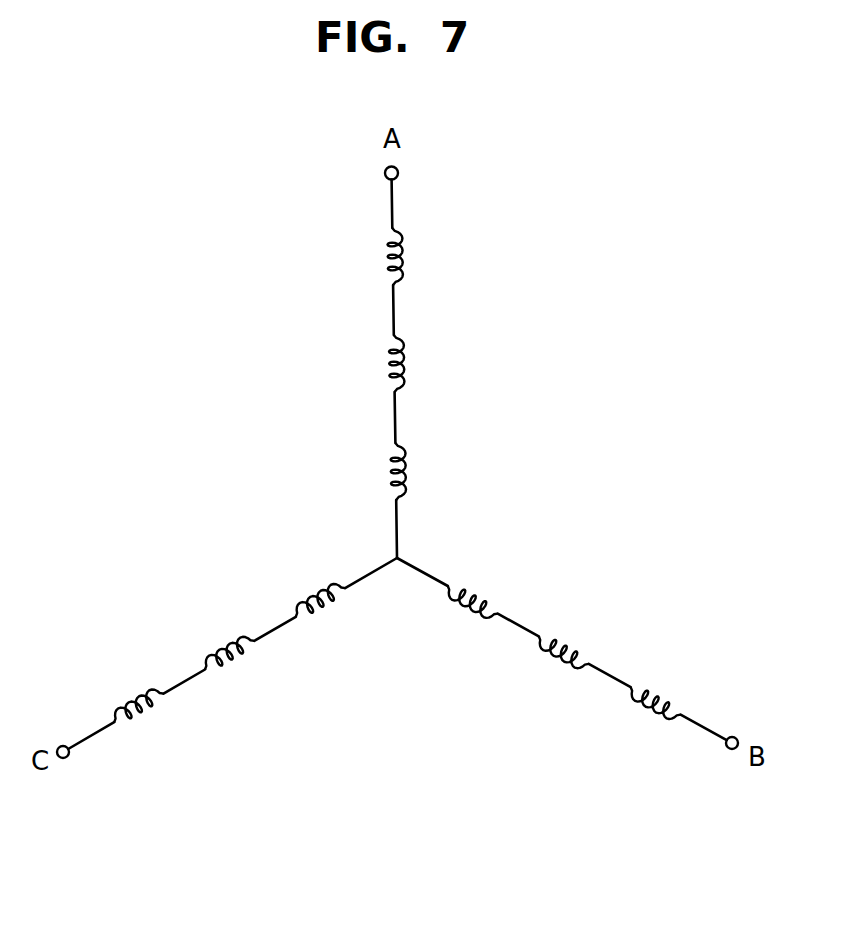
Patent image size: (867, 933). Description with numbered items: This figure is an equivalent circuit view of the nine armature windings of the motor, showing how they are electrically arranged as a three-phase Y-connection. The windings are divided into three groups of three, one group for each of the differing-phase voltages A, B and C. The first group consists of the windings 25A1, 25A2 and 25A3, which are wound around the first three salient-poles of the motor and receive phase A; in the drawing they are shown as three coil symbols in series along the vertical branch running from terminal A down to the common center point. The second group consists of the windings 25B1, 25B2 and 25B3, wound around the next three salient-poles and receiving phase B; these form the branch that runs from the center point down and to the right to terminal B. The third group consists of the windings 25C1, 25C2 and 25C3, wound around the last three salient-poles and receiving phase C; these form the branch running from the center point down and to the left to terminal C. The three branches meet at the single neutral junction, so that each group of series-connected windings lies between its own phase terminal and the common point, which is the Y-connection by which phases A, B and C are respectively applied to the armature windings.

The armature winding 25A1 is at (402, 260).
The armature winding 25A2 is at (404, 365).
The armature winding 25A3 is at (405, 475).
The armature winding 25B1 is at (647, 710).
The armature winding 25B2 is at (555, 658).
The armature winding 25B3 is at (468, 613).
The armature winding 25C1 is at (130, 698).
The armature winding 25C2 is at (220, 650).
The armature winding 25C3 is at (323, 592).